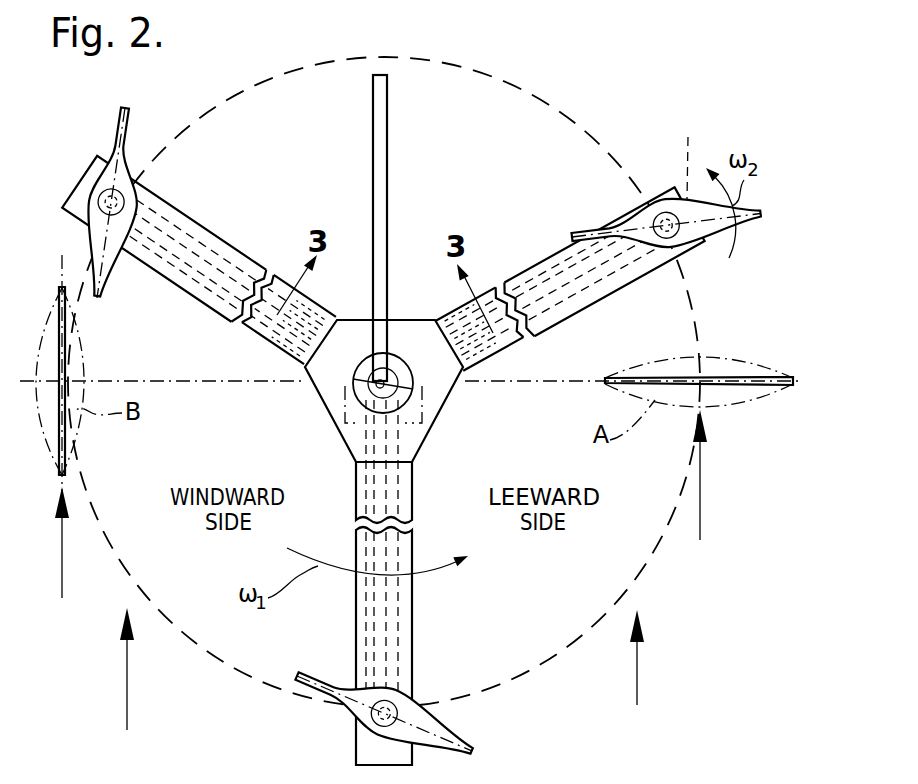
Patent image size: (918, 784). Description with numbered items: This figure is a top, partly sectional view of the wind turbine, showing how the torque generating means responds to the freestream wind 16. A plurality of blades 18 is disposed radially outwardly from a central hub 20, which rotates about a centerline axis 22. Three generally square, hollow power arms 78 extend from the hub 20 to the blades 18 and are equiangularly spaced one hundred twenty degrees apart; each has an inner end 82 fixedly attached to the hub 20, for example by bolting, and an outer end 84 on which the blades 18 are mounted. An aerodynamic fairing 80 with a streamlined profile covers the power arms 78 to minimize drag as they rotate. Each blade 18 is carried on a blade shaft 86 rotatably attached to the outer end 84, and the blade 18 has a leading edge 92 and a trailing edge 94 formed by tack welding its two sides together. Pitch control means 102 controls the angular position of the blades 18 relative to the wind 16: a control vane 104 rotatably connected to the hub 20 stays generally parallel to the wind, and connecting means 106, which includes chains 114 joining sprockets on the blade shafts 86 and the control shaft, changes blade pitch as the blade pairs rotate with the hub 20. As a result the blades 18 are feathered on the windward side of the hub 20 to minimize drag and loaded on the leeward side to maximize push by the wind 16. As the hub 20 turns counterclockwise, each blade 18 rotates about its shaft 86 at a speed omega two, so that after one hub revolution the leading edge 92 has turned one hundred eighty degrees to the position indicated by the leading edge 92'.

The freestream wind 16 is at (62, 598).
The blade 18 is at (132, 139).
The hub 20 is at (357, 318).
The centerline axis 22 is at (360, 397).
The power arm 78 is at (205, 244).
The aerodynamic fairing 80 is at (264, 268).
The inner end 82 is at (442, 318).
The outer end 84 is at (666, 190).
The blade shaft 86 is at (688, 137).
The leading edge 92 is at (414, 476).
The leading edge 92' is at (699, 345).
The trailing edge 94 is at (121, 108).
The pitch control means 102 is at (325, 404).
The control vane 104 is at (373, 121).
The connecting means 106 is at (420, 612).
The chain 114 is at (197, 281).